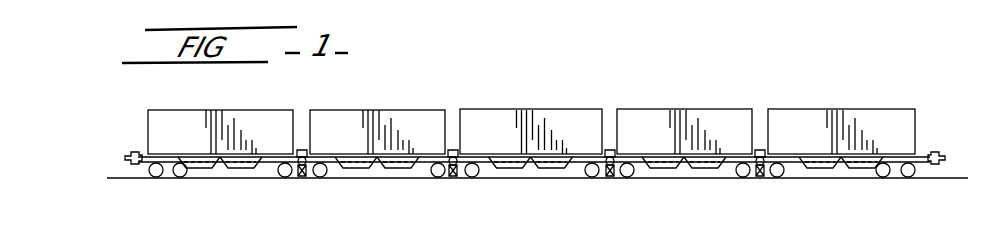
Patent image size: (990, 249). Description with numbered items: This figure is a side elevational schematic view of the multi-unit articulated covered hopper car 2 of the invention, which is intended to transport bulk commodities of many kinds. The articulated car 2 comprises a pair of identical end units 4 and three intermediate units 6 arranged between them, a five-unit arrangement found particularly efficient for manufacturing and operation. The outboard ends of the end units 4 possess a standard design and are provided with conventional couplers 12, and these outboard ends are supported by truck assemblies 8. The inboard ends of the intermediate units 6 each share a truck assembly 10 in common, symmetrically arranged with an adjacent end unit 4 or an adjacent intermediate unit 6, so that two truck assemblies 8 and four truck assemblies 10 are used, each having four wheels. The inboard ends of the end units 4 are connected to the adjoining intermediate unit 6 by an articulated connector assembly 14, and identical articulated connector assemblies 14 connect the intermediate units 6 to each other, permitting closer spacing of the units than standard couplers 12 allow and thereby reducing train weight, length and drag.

The multi-unit articulated covered hopper car 2 is at (562, 107).
The end unit 4 is at (183, 133).
The intermediate unit 6 is at (378, 120).
The truck assembly 8 is at (168, 177).
The truck assembly 10 is at (303, 177).
The coupler 12 is at (128, 153).
The articulated connector assembly 14 is at (303, 150).